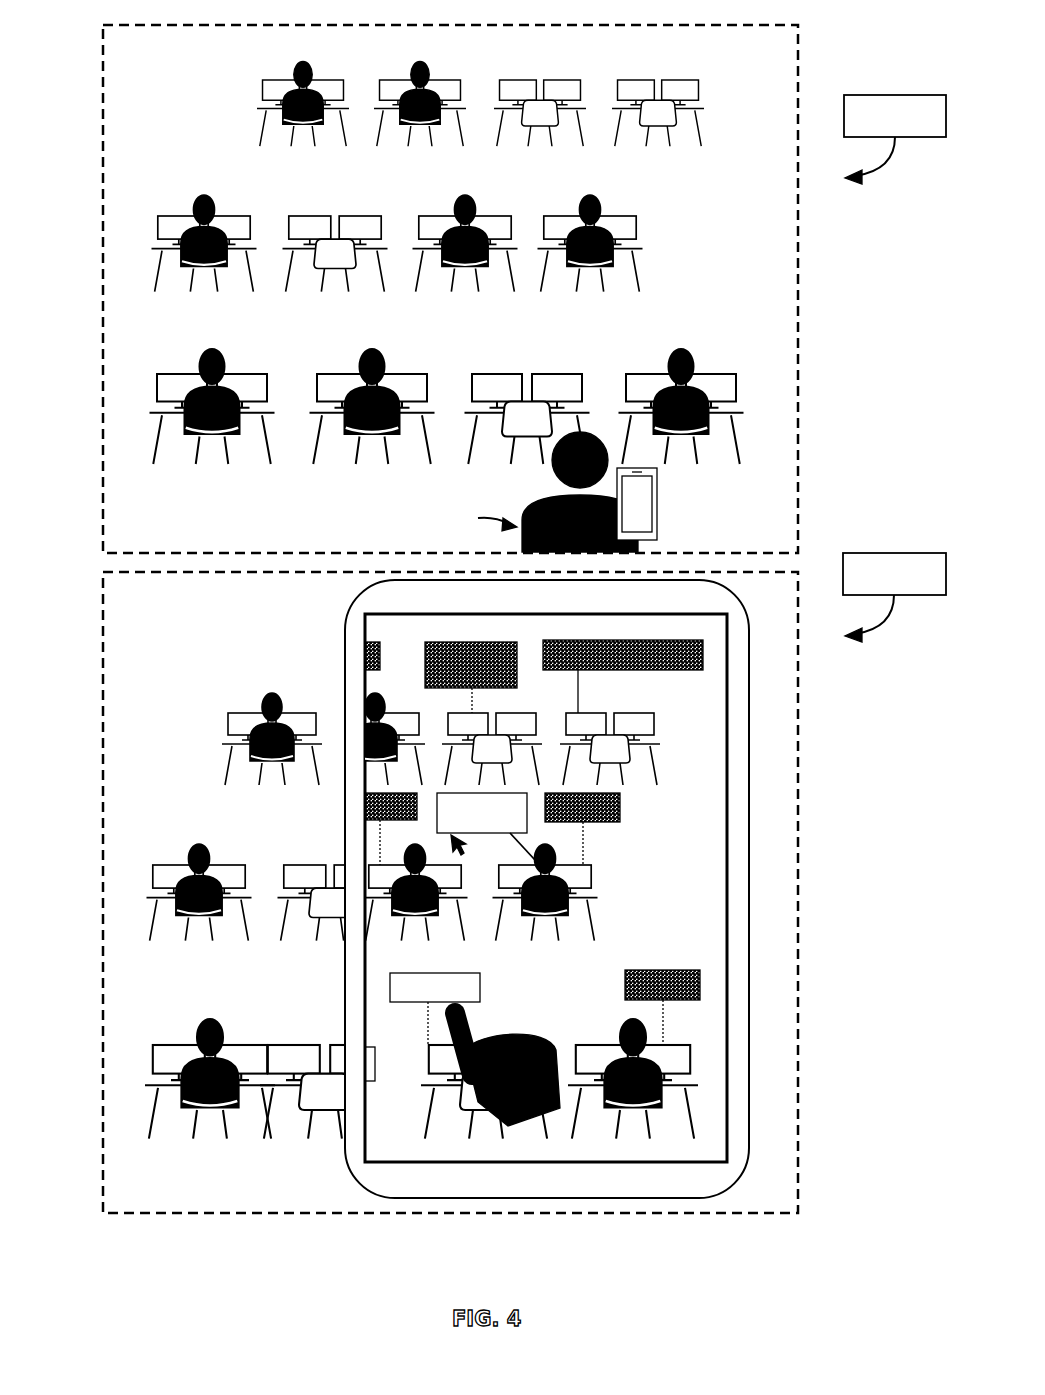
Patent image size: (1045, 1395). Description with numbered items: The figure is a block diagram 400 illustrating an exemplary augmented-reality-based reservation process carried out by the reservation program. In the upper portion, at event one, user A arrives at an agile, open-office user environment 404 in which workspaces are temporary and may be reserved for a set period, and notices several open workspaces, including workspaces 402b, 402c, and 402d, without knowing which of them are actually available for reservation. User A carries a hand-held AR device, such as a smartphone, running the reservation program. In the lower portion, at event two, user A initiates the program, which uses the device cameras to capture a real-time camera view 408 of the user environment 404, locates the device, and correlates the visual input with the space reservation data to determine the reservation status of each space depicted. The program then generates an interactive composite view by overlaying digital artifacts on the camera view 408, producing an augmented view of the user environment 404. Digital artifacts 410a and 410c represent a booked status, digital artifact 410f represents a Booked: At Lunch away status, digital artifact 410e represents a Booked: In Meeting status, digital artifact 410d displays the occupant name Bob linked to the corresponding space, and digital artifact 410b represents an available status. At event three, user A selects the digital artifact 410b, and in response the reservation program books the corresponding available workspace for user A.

The block diagram 400 is at (70, 94).
The workspace 402b is at (336, 200).
The workspace 402c is at (689, 66).
The workspace 402d is at (550, 66).
The user environment 404 is at (450, 619).
The camera view 408 is at (561, 888).
The digital artifact 410a is at (631, 954).
The digital artifact 410b is at (495, 990).
The digital artifact 410c is at (628, 810).
The digital artifact 410d is at (486, 833).
The digital artifact 410e is at (642, 678).
The digital artifact 410f is at (418, 660).